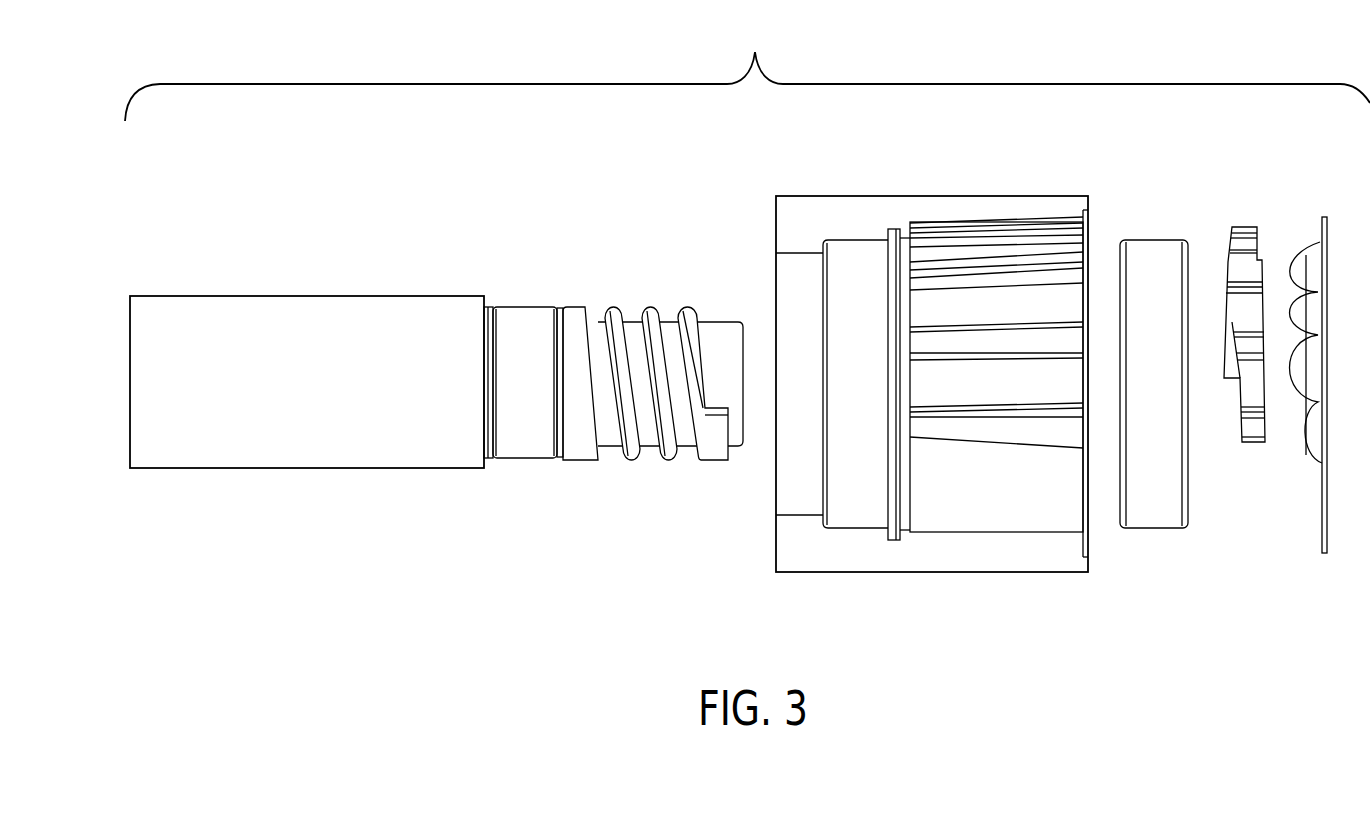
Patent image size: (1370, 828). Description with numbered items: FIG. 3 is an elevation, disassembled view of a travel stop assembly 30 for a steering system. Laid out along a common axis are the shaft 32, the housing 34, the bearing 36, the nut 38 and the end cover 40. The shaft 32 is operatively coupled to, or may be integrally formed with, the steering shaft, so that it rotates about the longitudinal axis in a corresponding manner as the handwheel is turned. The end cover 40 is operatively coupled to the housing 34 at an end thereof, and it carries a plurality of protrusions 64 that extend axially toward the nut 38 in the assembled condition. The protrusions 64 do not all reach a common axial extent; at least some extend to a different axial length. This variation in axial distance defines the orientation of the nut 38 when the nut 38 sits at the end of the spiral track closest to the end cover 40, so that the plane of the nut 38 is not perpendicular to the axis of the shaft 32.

The travel stop assembly 30 is at (747, 67).
The shaft 32 is at (345, 468).
The housing 34 is at (898, 572).
The bearing 36 is at (1153, 528).
The nut 38 is at (1247, 227).
The end cover 40 is at (1322, 537).
The protrusions 64 is at (1305, 267).